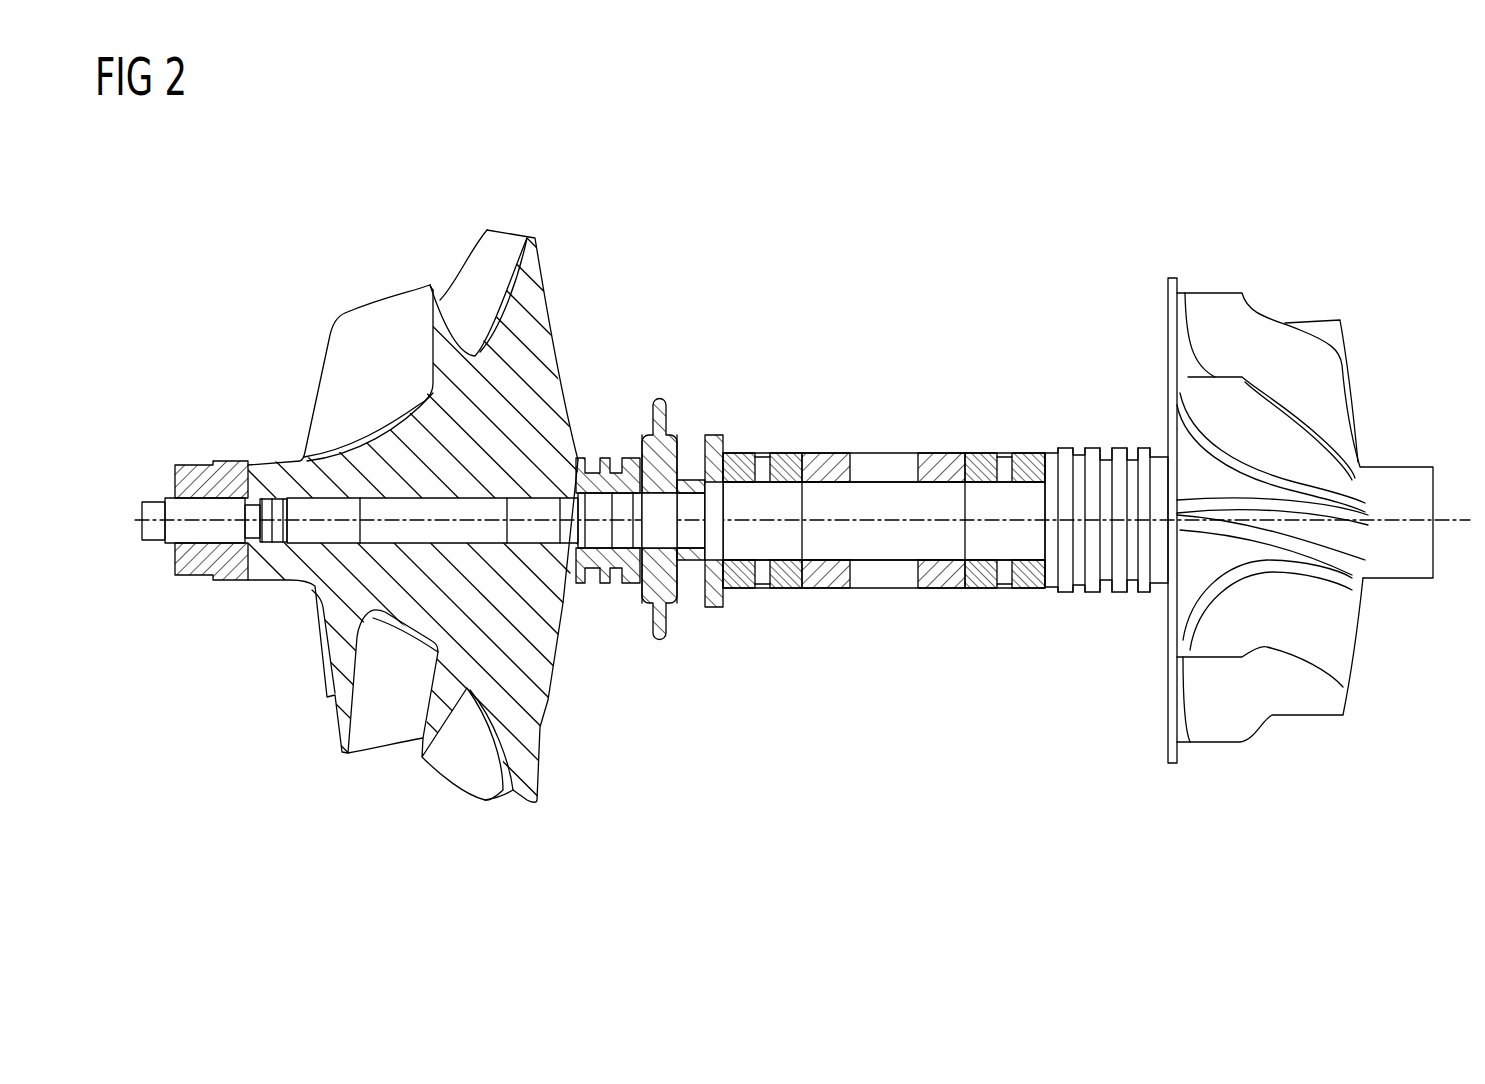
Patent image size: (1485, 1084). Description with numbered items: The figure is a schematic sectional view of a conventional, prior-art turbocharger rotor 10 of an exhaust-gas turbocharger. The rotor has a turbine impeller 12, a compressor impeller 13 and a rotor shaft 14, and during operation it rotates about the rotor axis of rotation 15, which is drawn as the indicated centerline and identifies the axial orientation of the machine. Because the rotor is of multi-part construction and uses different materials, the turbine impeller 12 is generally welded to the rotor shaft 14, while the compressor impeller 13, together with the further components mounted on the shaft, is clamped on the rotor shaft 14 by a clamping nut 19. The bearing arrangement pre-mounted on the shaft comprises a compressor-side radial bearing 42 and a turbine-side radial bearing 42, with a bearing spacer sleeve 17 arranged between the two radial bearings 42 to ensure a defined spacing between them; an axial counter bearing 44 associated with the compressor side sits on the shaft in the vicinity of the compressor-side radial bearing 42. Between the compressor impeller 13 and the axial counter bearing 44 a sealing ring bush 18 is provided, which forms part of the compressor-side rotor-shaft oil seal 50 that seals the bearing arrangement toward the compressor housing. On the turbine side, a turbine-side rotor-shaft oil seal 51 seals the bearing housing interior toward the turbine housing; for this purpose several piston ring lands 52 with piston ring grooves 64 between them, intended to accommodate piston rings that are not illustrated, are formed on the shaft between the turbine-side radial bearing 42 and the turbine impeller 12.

The turbocharger rotor 10 is at (1174, 207).
The turbine impeller 12 is at (1395, 745).
The compressor impeller 13 is at (275, 732).
The rotor shaft 14 is at (900, 543).
The rotor axis of rotation 15 is at (872, 548).
The bearing spacer sleeve 17 is at (827, 570).
The sealing ring bush 18 is at (617, 557).
The clamping nut 19 is at (192, 483).
The radial bearing 42 is at (766, 423).
The axial counter bearing 44 is at (694, 422).
The compressor-side rotor-shaft oil seal 50 is at (606, 418).
The turbine-side rotor-shaft oil seal 51 is at (1072, 640).
The piston ring lands 52 is at (1143, 590).
The piston ring grooves 64 is at (1103, 452).